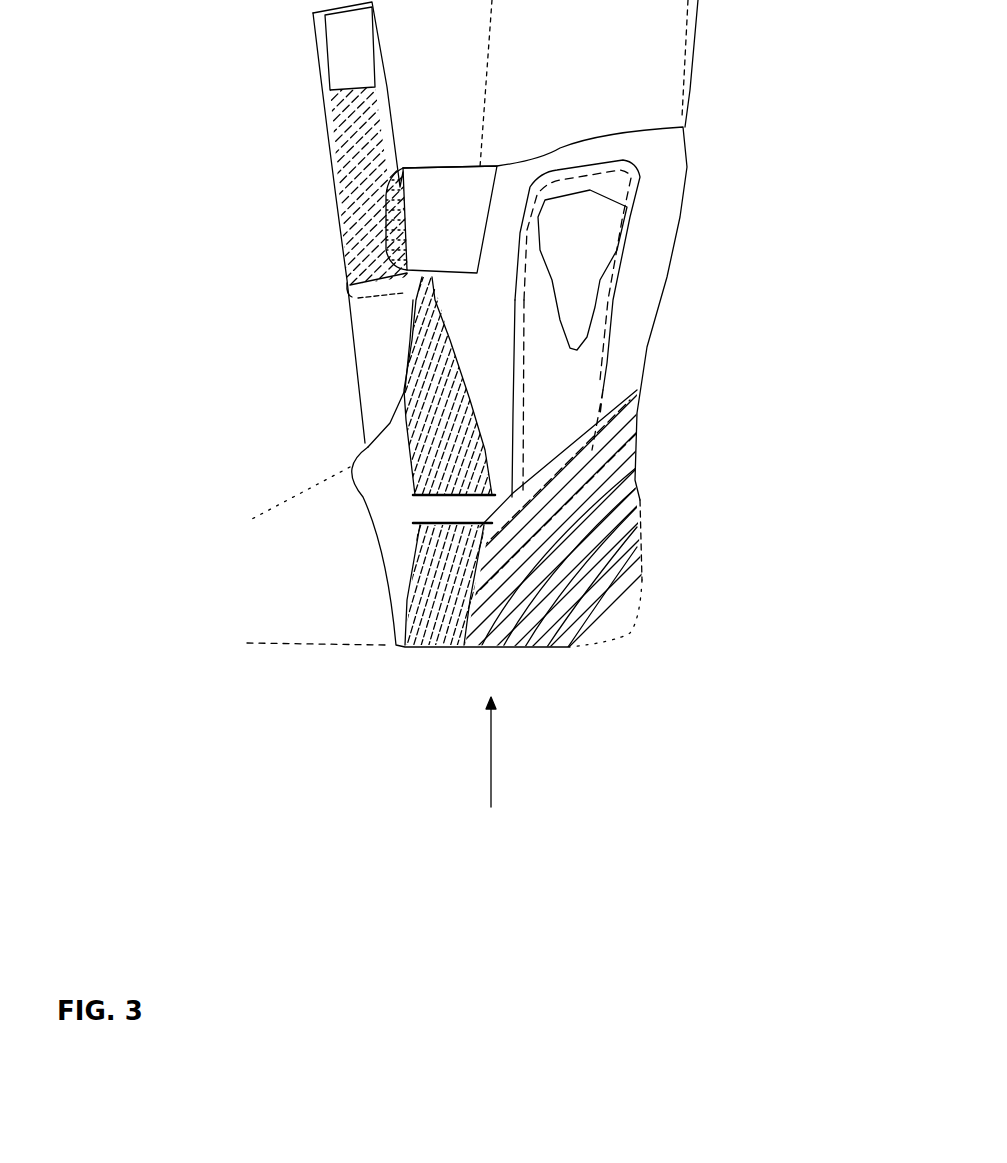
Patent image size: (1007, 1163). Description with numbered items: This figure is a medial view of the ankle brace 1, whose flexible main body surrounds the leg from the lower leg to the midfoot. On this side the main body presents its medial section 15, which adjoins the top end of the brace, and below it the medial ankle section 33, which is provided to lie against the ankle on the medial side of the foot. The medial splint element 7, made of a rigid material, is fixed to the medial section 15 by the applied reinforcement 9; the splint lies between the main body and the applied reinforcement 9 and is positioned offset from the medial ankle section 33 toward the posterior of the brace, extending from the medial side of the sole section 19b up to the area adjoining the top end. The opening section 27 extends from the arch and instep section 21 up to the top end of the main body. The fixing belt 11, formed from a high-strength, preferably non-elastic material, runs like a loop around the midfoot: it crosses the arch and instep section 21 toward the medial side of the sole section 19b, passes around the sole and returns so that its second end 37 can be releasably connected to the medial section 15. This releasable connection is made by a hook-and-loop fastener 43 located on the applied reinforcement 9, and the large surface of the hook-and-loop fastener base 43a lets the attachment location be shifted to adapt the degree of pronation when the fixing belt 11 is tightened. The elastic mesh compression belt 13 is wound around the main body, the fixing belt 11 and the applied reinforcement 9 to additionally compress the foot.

The ankle brace 1 is at (492, 781).
The medial splint element 7 is at (577, 375).
The applied reinforcement 9 is at (617, 282).
The fixing belt 11 is at (447, 410).
The compression belt 13 is at (608, 493).
The medial section 15 is at (502, 452).
The medial side of the sole section 19b is at (520, 635).
The arch and instep section 21 is at (383, 453).
The opening section 27 is at (447, 217).
The medial ankle section 33 is at (493, 533).
The second end of the fixing belt 37 is at (358, 55).
The hook-and-loop fastener 43 is at (358, 55).
The hook-and-loop fastener base 43a is at (587, 225).